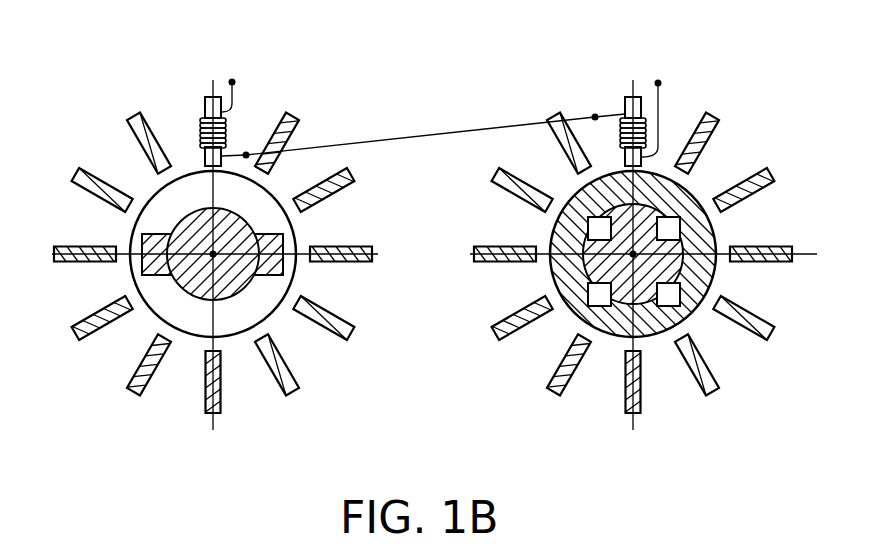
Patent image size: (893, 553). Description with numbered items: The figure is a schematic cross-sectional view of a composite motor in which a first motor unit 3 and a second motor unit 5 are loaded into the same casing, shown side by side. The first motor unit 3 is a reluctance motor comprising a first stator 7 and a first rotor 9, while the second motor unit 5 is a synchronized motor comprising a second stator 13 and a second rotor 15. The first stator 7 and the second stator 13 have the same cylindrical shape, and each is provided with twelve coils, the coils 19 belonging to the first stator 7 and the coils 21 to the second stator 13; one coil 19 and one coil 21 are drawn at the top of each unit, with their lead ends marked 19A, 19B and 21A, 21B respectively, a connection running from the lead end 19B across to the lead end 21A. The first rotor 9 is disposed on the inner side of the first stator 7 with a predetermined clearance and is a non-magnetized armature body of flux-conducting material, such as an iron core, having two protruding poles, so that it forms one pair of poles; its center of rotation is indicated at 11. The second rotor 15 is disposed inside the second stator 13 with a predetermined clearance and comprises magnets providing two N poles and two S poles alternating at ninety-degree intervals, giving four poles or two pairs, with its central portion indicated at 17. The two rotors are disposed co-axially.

The first motor unit 3 is at (102, 378).
The second motor unit 5 is at (522, 378).
The first stator 7 is at (337, 187).
The first rotor 9 is at (267, 267).
The rotor shaft of first motor 11 is at (213, 254).
The second stator 13 is at (757, 187).
The second rotor 15 is at (693, 263).
The rotor core of second motor 17 is at (633, 254).
The coils 19 is at (250, 118).
The first terminal of coil 19 19A is at (232, 82).
The second terminal of coil 19 19B is at (246, 155).
The coils 21 is at (670, 133).
The first terminal of coil 21 21A is at (595, 117).
The second terminal of coil 21 21B is at (658, 83).